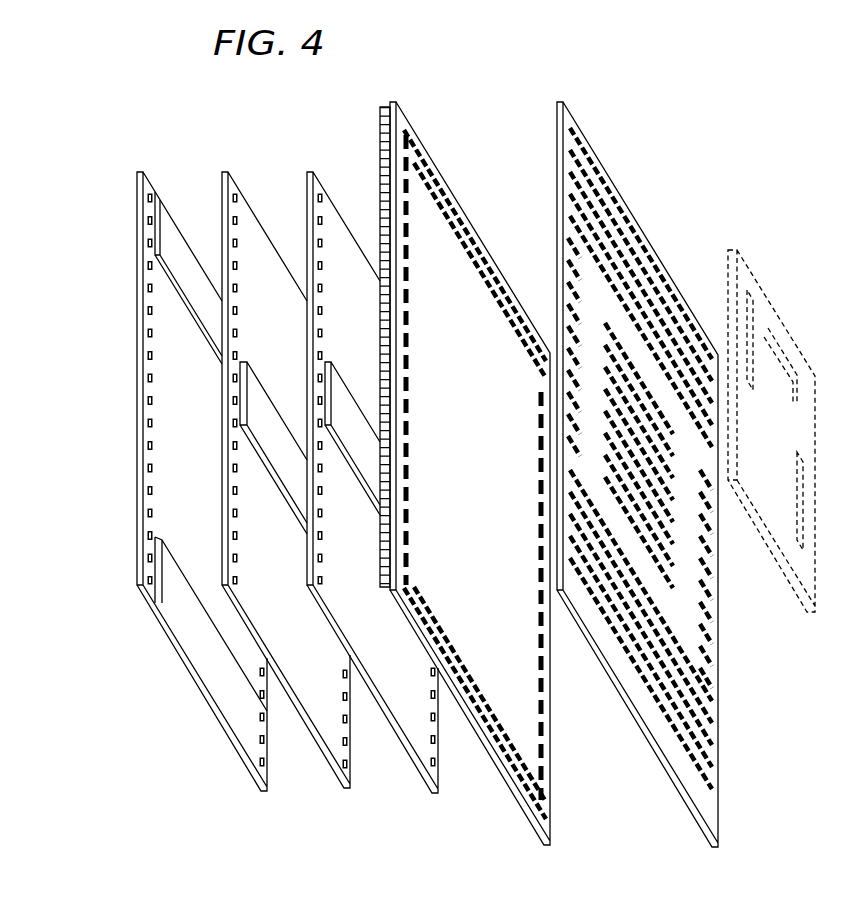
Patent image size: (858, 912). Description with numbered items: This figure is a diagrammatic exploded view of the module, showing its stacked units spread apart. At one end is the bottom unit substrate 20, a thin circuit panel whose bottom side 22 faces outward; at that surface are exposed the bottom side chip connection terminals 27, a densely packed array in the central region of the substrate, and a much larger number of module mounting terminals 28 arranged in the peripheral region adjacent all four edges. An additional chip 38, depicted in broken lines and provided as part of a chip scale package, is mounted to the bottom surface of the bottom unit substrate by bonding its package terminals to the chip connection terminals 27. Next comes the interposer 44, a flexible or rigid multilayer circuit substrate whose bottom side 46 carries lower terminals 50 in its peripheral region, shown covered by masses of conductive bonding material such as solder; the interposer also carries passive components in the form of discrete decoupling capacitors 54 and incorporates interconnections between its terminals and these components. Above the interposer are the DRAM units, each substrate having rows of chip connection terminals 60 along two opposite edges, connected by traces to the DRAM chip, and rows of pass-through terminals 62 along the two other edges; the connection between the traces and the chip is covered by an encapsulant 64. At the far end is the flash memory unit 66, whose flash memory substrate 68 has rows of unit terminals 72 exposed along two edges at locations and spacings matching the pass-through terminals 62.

The bottom unit substrate 20 is at (666, 474).
The bottom side 22 is at (640, 357).
The bottom side chip connection terminals 27 is at (663, 553).
The module mounting terminals 28 is at (683, 724).
The additional chip 38 is at (790, 340).
The interposer 44 is at (465, 452).
The bottom side 46 is at (453, 303).
The lower terminals 50 is at (440, 183).
The discrete decoupling capacitors 54 is at (340, 536).
The chip connection terminals 60 is at (432, 790).
The pass-through terminals 62 is at (317, 222).
The encapsulant 64 is at (351, 400).
The flash memory unit 66 is at (156, 481).
The flash memory substrate 68 is at (170, 415).
The unit terminals 72 is at (150, 517).